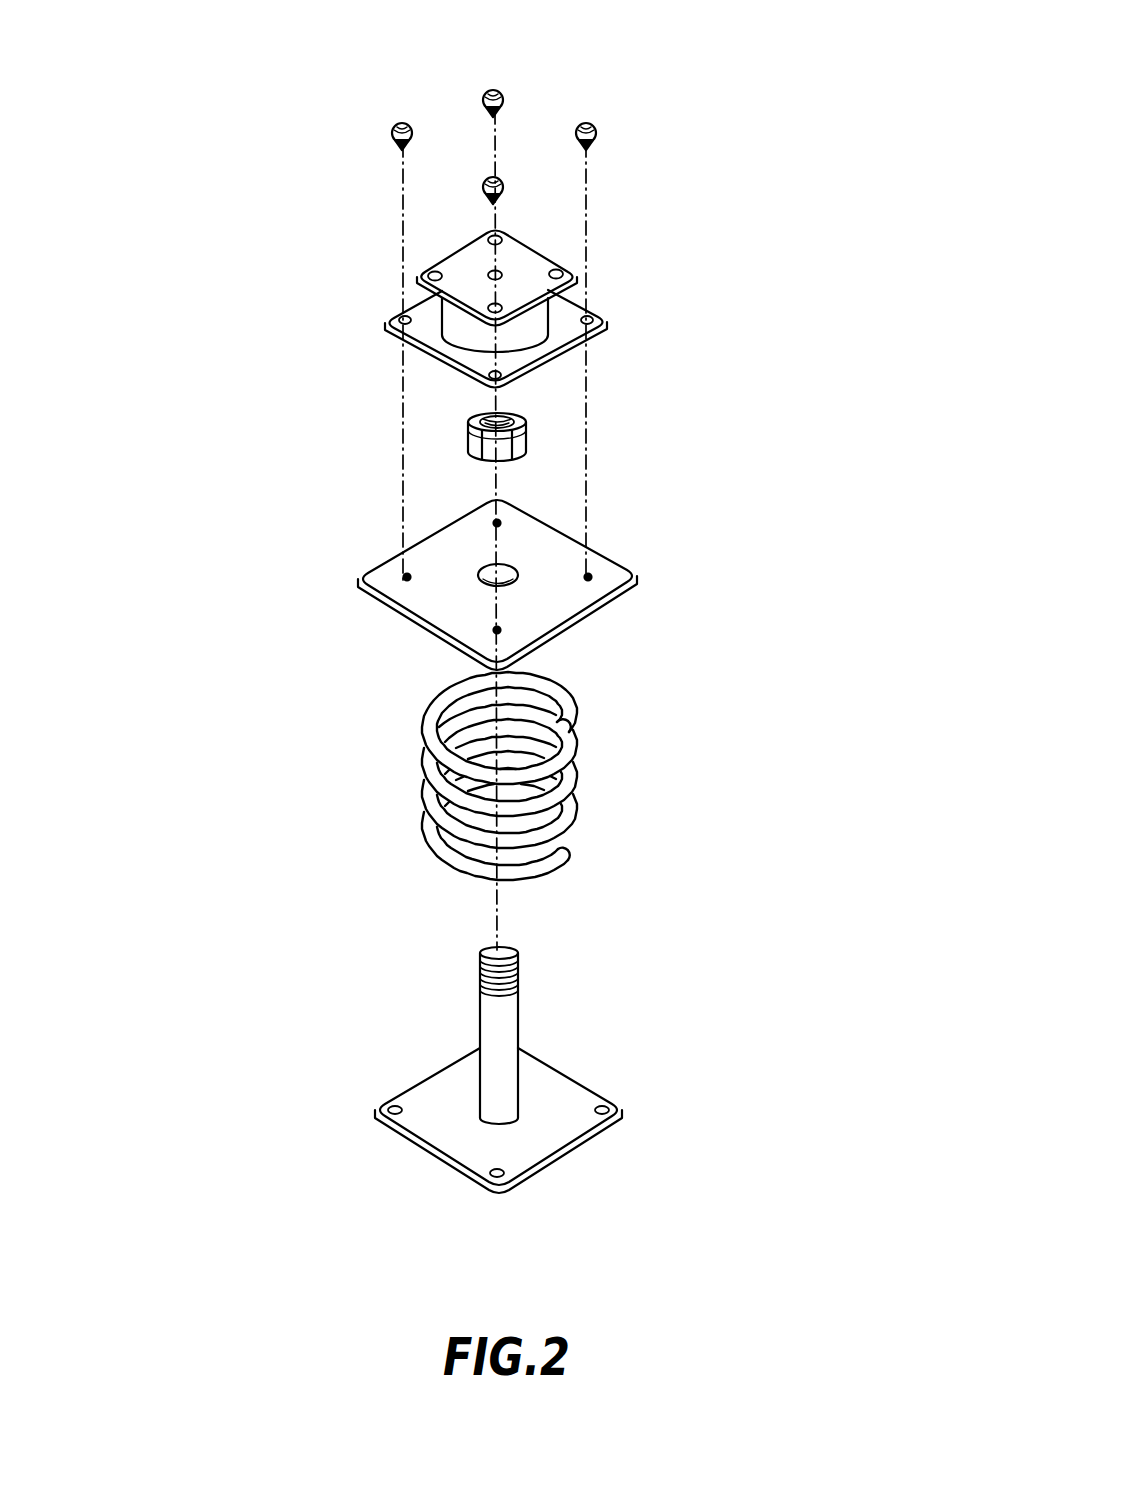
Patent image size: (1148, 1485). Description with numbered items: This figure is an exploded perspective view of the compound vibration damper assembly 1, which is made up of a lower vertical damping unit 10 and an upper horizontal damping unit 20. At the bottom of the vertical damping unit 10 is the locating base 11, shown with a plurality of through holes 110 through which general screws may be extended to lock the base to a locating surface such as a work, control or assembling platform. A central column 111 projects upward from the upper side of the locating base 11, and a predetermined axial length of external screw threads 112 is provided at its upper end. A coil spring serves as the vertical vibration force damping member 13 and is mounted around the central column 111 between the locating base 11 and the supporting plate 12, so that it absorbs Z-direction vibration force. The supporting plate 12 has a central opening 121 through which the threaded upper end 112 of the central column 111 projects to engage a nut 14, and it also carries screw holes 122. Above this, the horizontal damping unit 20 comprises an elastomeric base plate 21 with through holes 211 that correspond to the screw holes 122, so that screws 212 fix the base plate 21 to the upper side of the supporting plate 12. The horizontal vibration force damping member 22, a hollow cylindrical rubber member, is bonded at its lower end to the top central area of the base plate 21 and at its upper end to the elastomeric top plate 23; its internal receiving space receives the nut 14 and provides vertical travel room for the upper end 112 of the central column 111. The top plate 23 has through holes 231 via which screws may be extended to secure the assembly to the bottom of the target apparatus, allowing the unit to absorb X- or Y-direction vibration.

The compound vibration damper assembly 1 is at (172, 73).
The vertical damping unit 10 is at (821, 480).
The locating base 11 is at (504, 1129).
The through holes 110 is at (615, 1100).
The central column 111 is at (568, 1035).
The external screw threads 112 is at (517, 975).
The supporting plate 12 is at (503, 592).
The central opening 121 is at (577, 626).
The screw holes 122 is at (503, 600).
The vertical vibration force damping member 13 is at (553, 776).
The nut 14 is at (574, 438).
The horizontal damping unit 20 is at (815, 110).
The elastomeric base plate 21 is at (520, 335).
The through holes 211 is at (400, 317).
The screws 212 is at (510, 114).
The horizontal vibration force damping member 22 is at (561, 353).
The elastomeric top plate 23 is at (567, 247).
The through holes 231 is at (558, 272).